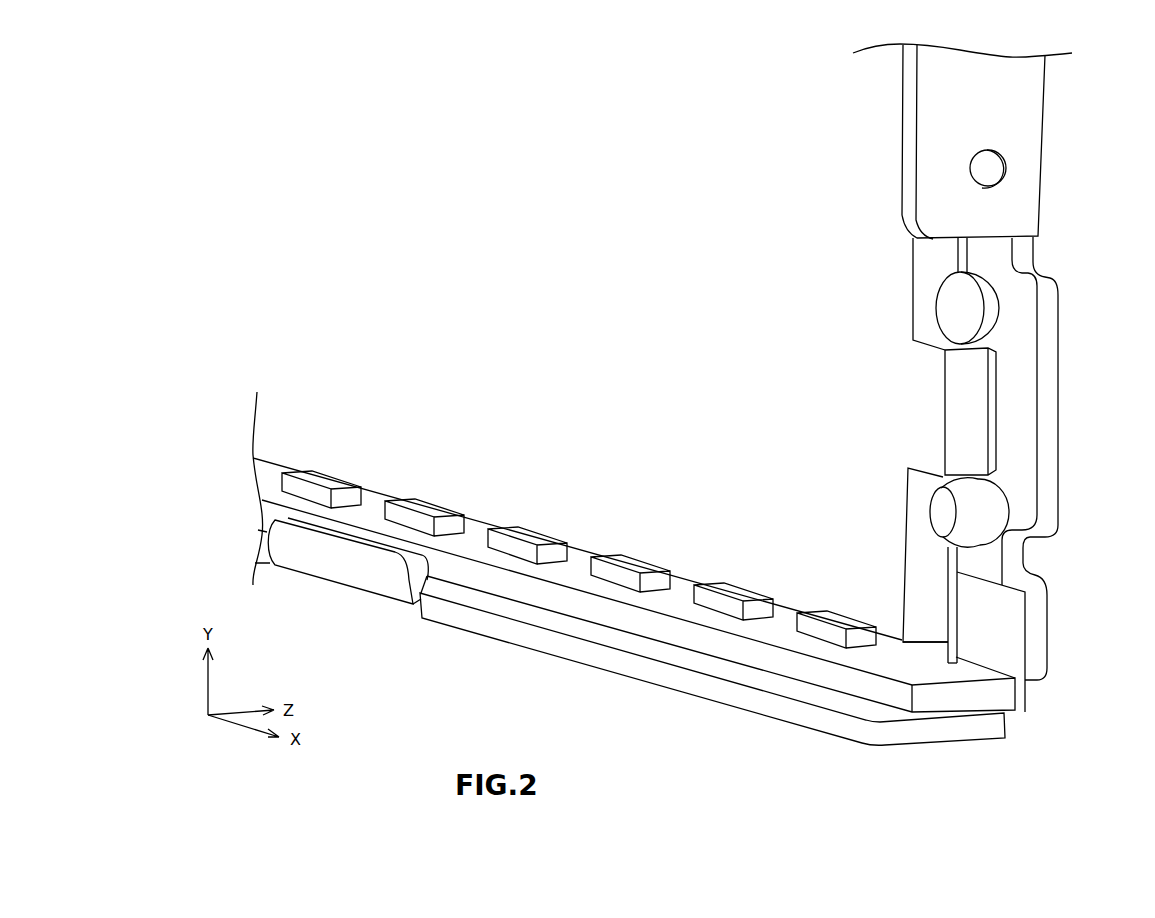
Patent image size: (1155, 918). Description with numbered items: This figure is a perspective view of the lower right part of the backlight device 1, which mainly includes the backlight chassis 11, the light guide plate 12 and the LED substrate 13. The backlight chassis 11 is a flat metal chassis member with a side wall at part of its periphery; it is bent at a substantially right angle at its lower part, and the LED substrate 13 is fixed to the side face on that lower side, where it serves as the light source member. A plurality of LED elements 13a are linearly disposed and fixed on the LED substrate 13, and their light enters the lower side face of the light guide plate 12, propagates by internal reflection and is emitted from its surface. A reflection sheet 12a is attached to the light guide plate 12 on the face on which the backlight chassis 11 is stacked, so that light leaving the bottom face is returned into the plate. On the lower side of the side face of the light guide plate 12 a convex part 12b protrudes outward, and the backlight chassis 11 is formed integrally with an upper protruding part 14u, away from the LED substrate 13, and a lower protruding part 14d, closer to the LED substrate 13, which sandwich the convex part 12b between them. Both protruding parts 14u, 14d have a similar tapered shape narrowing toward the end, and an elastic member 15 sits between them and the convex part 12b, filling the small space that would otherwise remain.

The backlight device 1 is at (239, 110).
The backlight chassis 11 is at (1028, 151).
The light guide plate 12 is at (930, 602).
The reflection sheet 12a is at (930, 650).
The convex part 12b is at (977, 433).
The LED substrate 13 is at (985, 700).
The LED elements 13a is at (710, 607).
The protruding part 14u is at (993, 280).
The protruding part 14d is at (982, 517).
The elastic member 15 is at (977, 313).